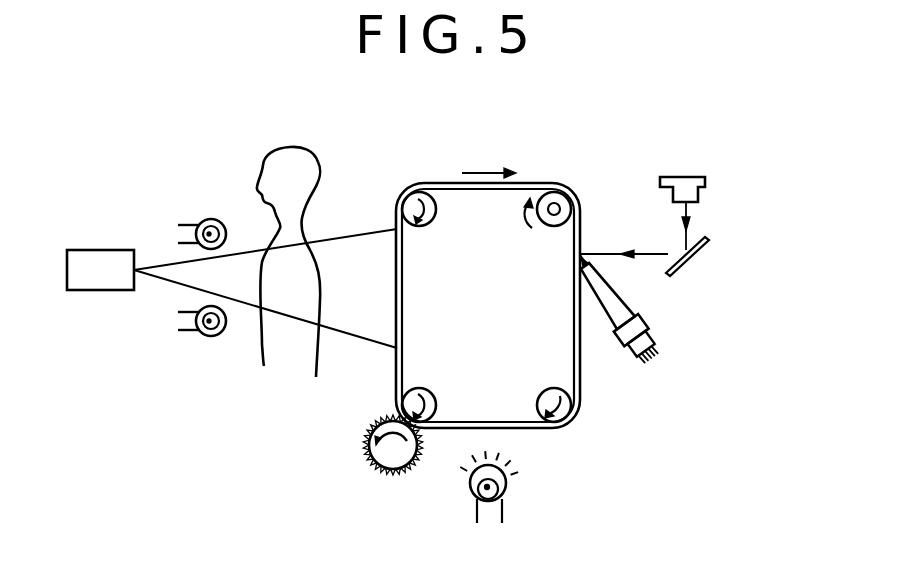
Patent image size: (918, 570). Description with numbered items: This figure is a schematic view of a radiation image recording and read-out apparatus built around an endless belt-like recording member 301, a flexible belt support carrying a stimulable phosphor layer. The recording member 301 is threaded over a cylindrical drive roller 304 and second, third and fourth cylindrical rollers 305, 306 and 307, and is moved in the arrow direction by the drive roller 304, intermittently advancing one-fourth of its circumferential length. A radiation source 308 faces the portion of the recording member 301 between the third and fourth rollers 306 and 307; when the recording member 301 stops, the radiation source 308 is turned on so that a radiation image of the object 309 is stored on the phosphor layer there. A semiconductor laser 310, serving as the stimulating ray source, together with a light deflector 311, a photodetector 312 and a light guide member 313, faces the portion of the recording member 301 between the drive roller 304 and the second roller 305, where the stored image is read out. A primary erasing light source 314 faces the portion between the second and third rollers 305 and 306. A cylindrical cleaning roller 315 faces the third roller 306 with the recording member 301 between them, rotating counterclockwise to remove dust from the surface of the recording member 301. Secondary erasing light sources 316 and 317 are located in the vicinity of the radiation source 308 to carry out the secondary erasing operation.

The endless belt-like recording member 301 is at (530, 183).
The cylindrical drive roller 304 is at (547, 226).
The second cylindrical roller 305 is at (540, 390).
The third cylindrical roller 306 is at (430, 390).
The fourth cylindrical roller 307 is at (424, 226).
The radiation source 308 is at (111, 275).
The object 309 is at (320, 175).
The semiconductor laser 310 is at (705, 177).
The light deflector 311 is at (709, 243).
The photodetector 312 is at (663, 363).
The light guide member 313 is at (635, 319).
The primary erasing light source 314 is at (507, 485).
The cylindrical cleaning roller 315 is at (385, 473).
The secondary erasing light source 316 is at (211, 219).
The secondary erasing light source 317 is at (211, 336).